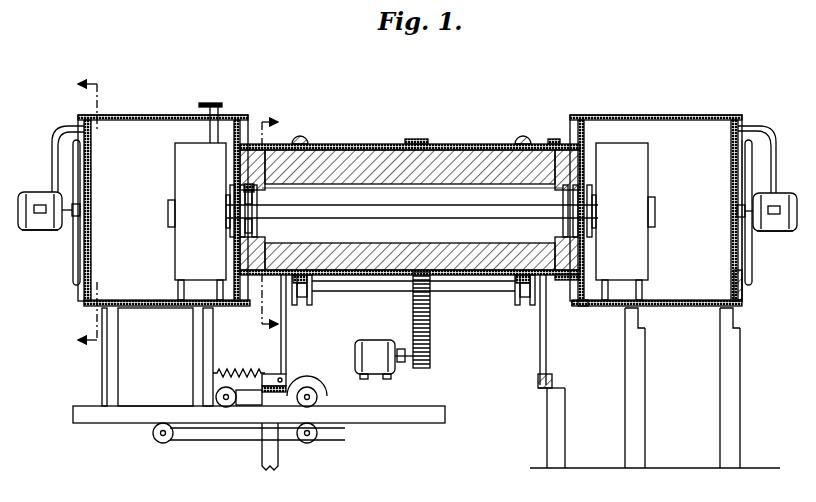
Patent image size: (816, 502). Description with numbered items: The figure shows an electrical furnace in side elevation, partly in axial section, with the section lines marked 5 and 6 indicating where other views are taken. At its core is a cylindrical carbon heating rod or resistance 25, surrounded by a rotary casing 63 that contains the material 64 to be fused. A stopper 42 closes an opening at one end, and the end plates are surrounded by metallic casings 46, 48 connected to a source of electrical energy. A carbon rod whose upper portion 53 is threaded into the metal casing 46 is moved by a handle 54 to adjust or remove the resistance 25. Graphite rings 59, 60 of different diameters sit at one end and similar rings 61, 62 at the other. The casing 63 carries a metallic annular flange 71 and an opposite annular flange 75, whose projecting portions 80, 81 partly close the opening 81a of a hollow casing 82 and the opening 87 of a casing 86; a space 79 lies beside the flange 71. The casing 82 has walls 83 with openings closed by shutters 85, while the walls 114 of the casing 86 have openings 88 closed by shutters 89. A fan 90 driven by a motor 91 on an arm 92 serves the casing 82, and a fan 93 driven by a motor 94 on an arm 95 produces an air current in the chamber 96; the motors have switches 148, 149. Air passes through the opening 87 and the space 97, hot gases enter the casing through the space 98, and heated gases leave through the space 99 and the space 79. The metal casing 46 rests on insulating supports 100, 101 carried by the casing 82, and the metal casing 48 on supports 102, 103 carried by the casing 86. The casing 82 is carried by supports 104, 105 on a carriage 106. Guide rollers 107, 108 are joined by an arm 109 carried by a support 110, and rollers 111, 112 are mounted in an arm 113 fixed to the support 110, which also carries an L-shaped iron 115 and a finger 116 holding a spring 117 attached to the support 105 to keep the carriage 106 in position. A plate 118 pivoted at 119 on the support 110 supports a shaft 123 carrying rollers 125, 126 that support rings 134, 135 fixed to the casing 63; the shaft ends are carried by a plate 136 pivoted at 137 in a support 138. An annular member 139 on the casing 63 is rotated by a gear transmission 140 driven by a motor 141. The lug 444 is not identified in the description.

The section line 5- 5 is at (272, 226).
The section line 6- 6 is at (90, 217).
The heating rod or resistance 25 is at (452, 208).
The stopper 42 is at (168, 203).
The metallic casing 46 is at (174, 232).
The metallic casing 48 is at (640, 170).
The upper portion 53 is at (237, 122).
The handle 54 is at (212, 103).
The ring 59 is at (257, 188).
The ring 60 is at (257, 226).
The ring 61 is at (562, 192).
The ring 62 is at (562, 228).
The rotary casing 63 is at (384, 145).
The material 64 is at (336, 153).
The metallic annular flange 71 is at (250, 150).
The annular flange 75 is at (568, 142).
The space 79 is at (230, 262).
The annular projecting portion 80 is at (244, 145).
The annular projecting portion 81 is at (580, 128).
The opening 81a is at (253, 362).
The hollow casing 82 is at (152, 115).
The walls 83 is at (84, 298).
The shutters 85 is at (92, 255).
The casing 86 is at (664, 115).
The opening 87 is at (564, 304).
The openings 88 is at (738, 288).
The shutters 89 is at (733, 263).
The fan 90 is at (74, 270).
The motor 91 is at (40, 231).
The arm 92 is at (55, 136).
The fan 93 is at (752, 272).
The motor 94 is at (778, 232).
The arm 95 is at (772, 160).
The chamber 96 is at (700, 140).
The space 97 is at (592, 306).
The space 98 is at (578, 282).
The space 99 is at (240, 190).
The insulating support 100 is at (180, 302).
The insulating support 101 is at (252, 300).
The support 102 is at (610, 290).
The support 103 is at (643, 293).
The support 104 is at (118, 370).
The support 105 is at (194, 393).
The carriage 106 is at (88, 414).
The guide roller 107 is at (166, 444).
The guide roller 108 is at (312, 443).
The arm 109 is at (226, 436).
The support 110 is at (279, 458).
The roller 111 is at (223, 408).
The roller 112 is at (318, 397).
The arm 113 is at (300, 388).
The walls 114 is at (745, 126).
The L-shaped iron 115 is at (284, 376).
The finger 116 is at (273, 373).
The spring 117 is at (239, 362).
The plate 118 is at (288, 322).
The pivot 119 is at (285, 383).
The shaft 123 is at (457, 284).
The roller 125 is at (313, 296).
The roller 126 is at (516, 300).
The ring 134 is at (304, 137).
The ring 135 is at (525, 136).
The plate 136 is at (541, 336).
The pivot 137 is at (538, 378).
The support 138 is at (563, 388).
The annular member 139 is at (430, 142).
The gear transmission 140 is at (430, 326).
The motor 141 is at (376, 345).
The switch 148 is at (38, 192).
The switch 149 is at (778, 218).
The lug 444 is at (656, 212).